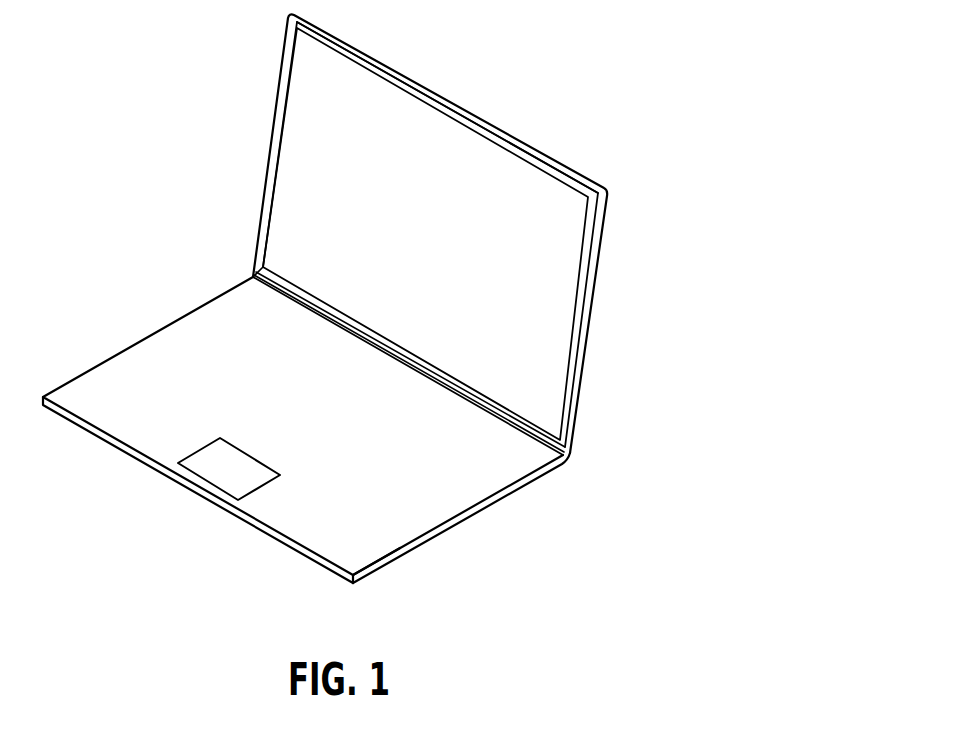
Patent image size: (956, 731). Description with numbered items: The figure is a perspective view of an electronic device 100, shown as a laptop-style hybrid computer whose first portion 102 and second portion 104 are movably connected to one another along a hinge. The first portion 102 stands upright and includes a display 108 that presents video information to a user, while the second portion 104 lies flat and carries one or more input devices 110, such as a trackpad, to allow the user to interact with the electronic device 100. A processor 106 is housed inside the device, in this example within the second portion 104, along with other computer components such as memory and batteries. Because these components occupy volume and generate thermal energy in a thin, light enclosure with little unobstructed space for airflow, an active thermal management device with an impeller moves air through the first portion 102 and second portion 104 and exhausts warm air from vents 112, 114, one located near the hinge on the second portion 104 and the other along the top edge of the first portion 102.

The electronic device 100 is at (603, 90).
The first portion 102 is at (601, 244).
The second portion 104 is at (473, 515).
The processor 106 is at (369, 545).
The display 108 is at (565, 297).
The input device 110 is at (223, 480).
The vent 112 is at (253, 276).
The vent 114 is at (457, 103).